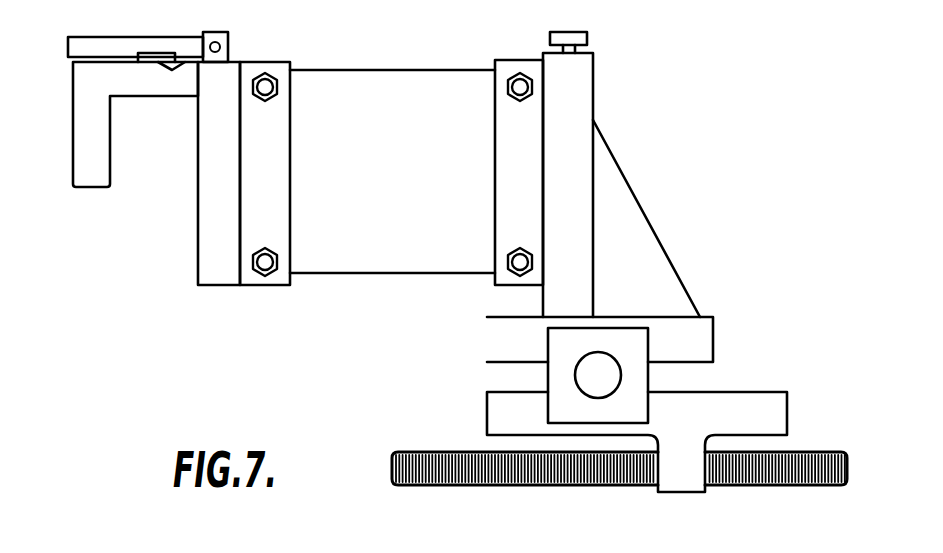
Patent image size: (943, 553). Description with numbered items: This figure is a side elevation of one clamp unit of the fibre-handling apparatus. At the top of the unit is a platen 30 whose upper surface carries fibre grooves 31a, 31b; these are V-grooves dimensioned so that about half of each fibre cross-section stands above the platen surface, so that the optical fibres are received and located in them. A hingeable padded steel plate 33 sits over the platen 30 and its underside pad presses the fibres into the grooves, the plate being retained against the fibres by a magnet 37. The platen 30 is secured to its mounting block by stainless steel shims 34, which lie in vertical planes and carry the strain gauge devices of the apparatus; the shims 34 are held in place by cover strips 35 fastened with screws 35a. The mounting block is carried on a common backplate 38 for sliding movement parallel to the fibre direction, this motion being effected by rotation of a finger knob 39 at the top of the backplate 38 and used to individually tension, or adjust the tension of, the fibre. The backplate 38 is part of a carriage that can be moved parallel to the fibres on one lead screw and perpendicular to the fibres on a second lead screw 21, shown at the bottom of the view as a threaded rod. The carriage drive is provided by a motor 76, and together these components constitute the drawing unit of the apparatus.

The lead screw 21 is at (775, 470).
The platen 30 is at (125, 75).
The fibre groove 31a is at (178, 66).
The fibre groove 31b is at (172, 70).
The hingeable padded steel plate 33 is at (191, 14).
The shim 34 is at (385, 243).
The cover strip 35 is at (275, 138).
The screw 35a is at (265, 85).
The magnet 37 is at (83, 159).
The backplate 38 is at (573, 124).
The finger knob 39 is at (583, 37).
The motor 76 is at (623, 342).